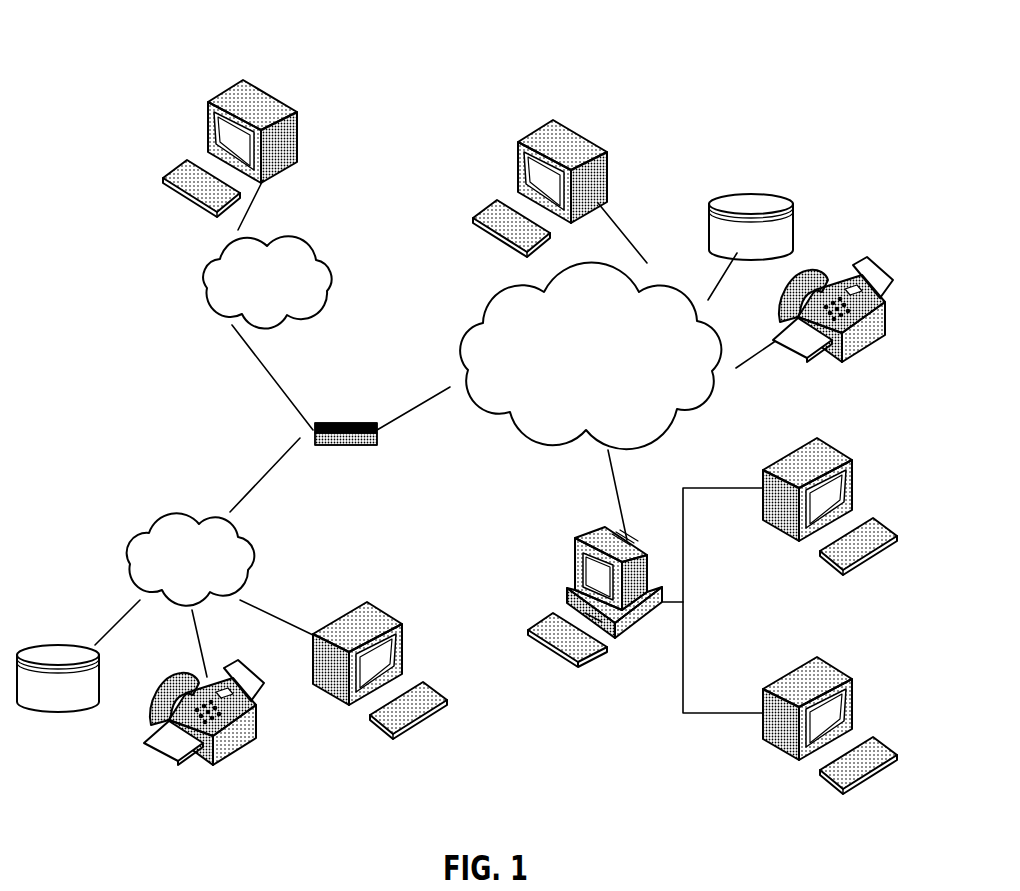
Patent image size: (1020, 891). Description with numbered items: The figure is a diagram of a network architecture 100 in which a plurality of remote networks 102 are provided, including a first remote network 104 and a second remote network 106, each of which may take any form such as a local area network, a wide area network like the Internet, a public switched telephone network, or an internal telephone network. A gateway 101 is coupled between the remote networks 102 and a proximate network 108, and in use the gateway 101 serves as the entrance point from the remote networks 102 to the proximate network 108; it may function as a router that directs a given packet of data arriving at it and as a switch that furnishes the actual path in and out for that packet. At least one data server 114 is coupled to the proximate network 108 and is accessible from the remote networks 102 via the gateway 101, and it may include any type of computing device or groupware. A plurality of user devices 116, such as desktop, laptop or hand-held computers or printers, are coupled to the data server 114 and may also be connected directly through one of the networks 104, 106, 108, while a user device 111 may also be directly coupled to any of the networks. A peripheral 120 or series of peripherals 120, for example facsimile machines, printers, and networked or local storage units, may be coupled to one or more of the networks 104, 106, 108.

The architecture 100 is at (145, 64).
The gateway 101 is at (328, 420).
The remote networks 102 is at (168, 340).
The first remote network 104 is at (117, 532).
The second remote network 106 is at (342, 252).
The proximate network 108 is at (697, 427).
The user device 111 is at (605, 154).
The data server 114 is at (575, 556).
The user devices 116 is at (297, 119).
The peripheral 120 is at (793, 203).